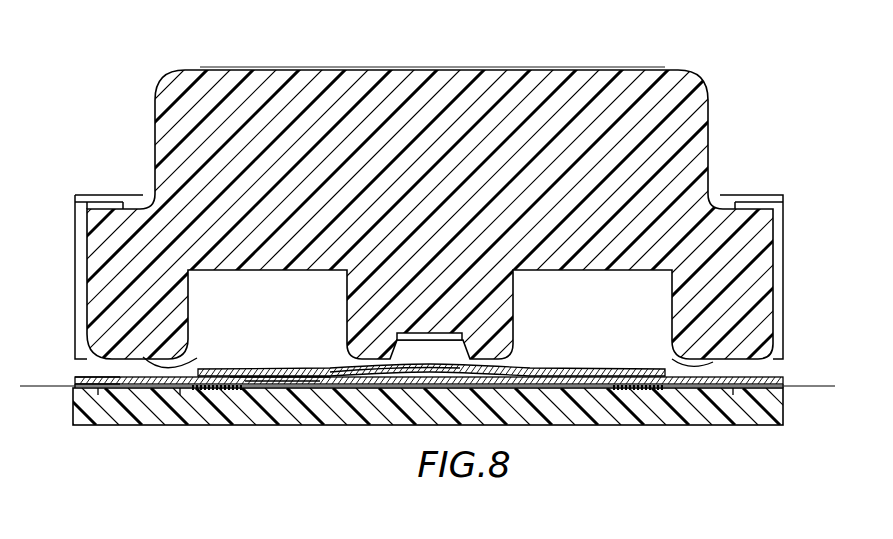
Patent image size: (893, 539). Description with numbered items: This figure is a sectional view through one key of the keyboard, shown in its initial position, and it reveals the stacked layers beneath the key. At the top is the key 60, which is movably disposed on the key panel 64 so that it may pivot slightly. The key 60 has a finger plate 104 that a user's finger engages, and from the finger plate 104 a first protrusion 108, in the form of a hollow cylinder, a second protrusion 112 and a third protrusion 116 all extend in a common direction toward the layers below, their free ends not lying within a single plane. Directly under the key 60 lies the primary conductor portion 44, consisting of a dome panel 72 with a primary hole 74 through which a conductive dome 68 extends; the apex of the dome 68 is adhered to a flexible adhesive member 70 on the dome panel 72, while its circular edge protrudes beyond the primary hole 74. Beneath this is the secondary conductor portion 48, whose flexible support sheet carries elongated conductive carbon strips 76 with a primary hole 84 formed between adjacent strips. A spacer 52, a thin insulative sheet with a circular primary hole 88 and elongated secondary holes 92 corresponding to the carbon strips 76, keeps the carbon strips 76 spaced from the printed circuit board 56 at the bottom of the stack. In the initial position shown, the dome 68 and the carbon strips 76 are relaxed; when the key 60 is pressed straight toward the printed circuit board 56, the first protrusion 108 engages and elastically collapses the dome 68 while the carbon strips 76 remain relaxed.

The primary conductor portion 44 is at (73, 377).
The secondary conductor portion 48 is at (73, 391).
The spacer 52 is at (187, 388).
The printed circuit board 56 is at (133, 428).
The key 60 is at (620, 64).
The key panel 64 is at (98, 194).
The conductive dome 68 is at (400, 378).
The flexible adhesive member 70 is at (570, 370).
The dome panel 72 is at (782, 377).
The primary hole 74 is at (263, 376).
The conductive carbon strip 76 is at (98, 388).
The primary hole 84 is at (278, 387).
The primary hole 88 is at (250, 388).
The secondary hole 92 is at (78, 388).
The finger plate 104 is at (497, 67).
The first protrusion 108 is at (517, 360).
The second protrusion 112 is at (173, 360).
The third protrusion 116 is at (710, 362).